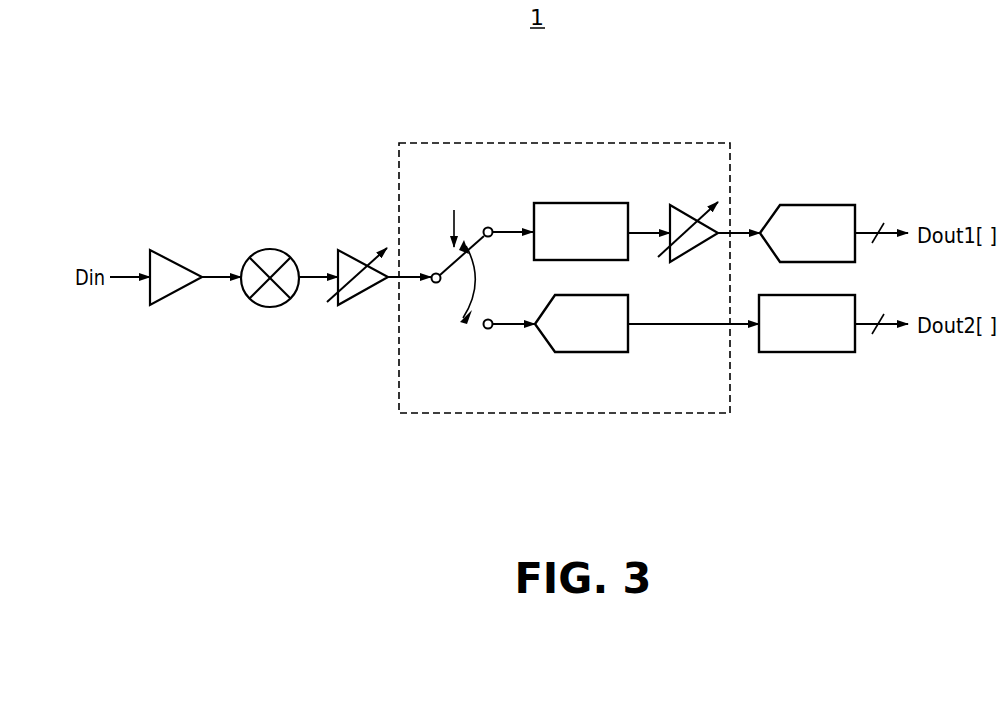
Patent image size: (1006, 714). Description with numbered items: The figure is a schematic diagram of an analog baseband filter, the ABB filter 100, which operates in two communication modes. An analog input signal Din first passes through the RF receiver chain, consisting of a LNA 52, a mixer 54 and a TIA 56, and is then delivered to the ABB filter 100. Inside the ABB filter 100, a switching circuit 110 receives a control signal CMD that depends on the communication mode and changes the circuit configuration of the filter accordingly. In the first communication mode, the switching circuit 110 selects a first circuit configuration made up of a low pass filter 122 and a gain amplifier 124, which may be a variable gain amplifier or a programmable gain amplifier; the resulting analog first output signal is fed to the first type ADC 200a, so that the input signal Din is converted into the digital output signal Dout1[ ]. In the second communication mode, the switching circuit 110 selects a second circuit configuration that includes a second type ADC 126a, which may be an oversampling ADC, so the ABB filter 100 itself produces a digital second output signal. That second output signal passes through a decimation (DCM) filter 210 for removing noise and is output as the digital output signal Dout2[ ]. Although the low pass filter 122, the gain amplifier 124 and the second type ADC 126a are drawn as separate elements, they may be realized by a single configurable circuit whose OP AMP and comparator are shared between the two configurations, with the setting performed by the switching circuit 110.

The LNA 52 is at (177, 259).
The mixer 54 is at (270, 249).
The TIA 56 is at (362, 253).
The ABB filter 100 is at (565, 143).
The switching circuit 110 is at (478, 241).
The low pass filter 122 is at (580, 203).
The gain amplifier 124 is at (693, 211).
The second type ADC 126a is at (580, 352).
The first type ADC 200a is at (805, 205).
The decimation (DCM) filter 210 is at (806, 352).